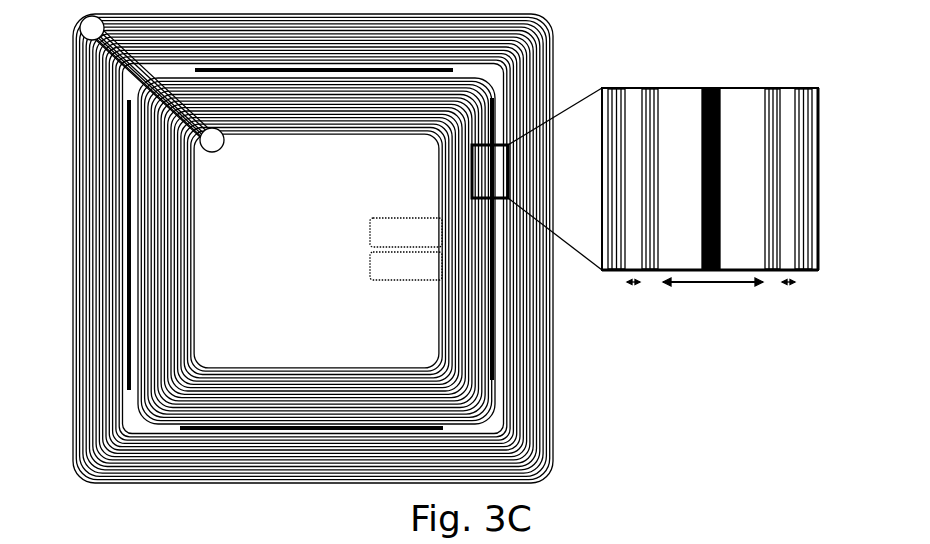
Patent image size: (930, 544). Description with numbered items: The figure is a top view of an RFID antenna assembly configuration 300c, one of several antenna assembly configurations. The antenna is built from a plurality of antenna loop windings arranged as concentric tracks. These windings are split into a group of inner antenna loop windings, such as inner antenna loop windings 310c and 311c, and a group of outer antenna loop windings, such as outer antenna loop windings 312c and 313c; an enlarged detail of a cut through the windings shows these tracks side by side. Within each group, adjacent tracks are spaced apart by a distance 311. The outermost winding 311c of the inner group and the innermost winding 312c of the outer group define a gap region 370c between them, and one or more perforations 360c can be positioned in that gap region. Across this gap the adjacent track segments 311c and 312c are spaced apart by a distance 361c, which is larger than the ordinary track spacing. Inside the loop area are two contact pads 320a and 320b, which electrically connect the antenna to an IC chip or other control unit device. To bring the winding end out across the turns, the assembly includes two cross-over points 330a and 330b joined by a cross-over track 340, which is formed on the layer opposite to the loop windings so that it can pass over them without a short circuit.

The RFID antenna assembly configuration 300c is at (308, 256).
The inner antenna loop winding 310c is at (619, 88).
The outermost inner antenna loop winding 311c is at (650, 88).
The innermost outer antenna loop winding 312c is at (770, 88).
The outer antenna loop winding 313c is at (805, 88).
The perforation 360c is at (712, 88).
The distance between adjacent track segments 361c is at (701, 292).
The gap region 370c is at (673, 218).
The track spacing distance 311 is at (633, 295).
The contact pad 320a is at (406, 232).
The contact pad 320b is at (406, 266).
The cross-over point 330a is at (224, 143).
The cross-over point 330b is at (82, 27).
The cross-over track 340 is at (120, 63).